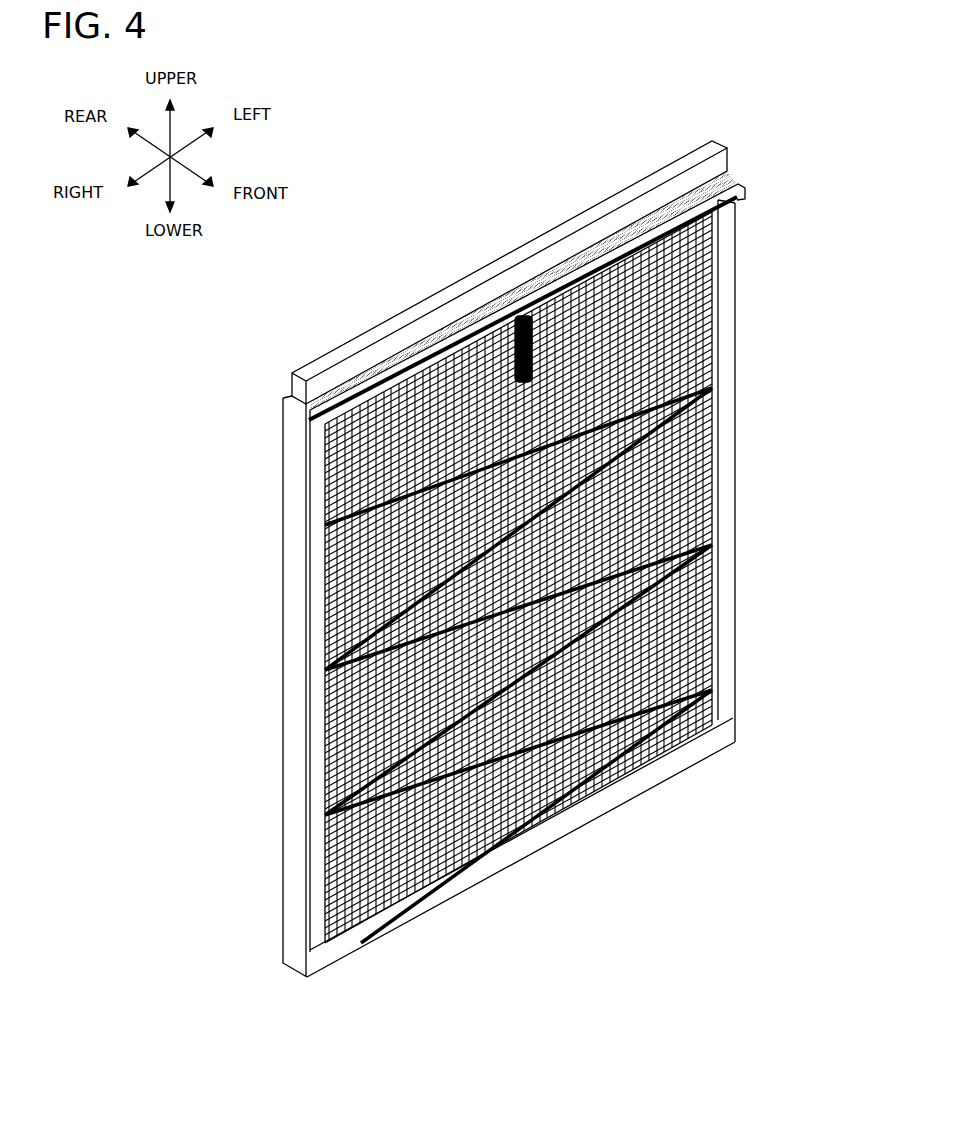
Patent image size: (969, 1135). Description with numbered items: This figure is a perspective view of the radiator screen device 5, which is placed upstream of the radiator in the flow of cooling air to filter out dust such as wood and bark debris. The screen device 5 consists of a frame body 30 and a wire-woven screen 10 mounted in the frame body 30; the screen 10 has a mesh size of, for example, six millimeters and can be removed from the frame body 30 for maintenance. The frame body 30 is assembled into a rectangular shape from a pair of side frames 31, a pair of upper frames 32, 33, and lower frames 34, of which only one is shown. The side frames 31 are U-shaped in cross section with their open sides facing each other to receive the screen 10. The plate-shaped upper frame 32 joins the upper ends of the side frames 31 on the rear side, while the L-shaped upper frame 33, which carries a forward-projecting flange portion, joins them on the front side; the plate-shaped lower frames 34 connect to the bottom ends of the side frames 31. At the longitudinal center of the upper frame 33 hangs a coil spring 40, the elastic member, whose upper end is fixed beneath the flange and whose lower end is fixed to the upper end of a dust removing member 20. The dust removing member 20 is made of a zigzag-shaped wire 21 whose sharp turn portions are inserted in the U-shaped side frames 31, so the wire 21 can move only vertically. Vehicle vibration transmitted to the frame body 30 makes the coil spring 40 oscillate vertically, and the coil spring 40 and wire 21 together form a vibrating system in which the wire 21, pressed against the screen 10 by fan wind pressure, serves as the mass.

The screen device 5 is at (424, 134).
The screen 10 is at (354, 340).
The dust removing member 20 is at (716, 336).
The wire 21 is at (715, 612).
The frame body 30 is at (296, 578).
The side frames 31 is at (735, 485).
The upper frame 32 is at (283, 398).
The upper frame 33 is at (690, 232).
The lower frames 34 is at (585, 820).
The coil spring 40 is at (508, 351).